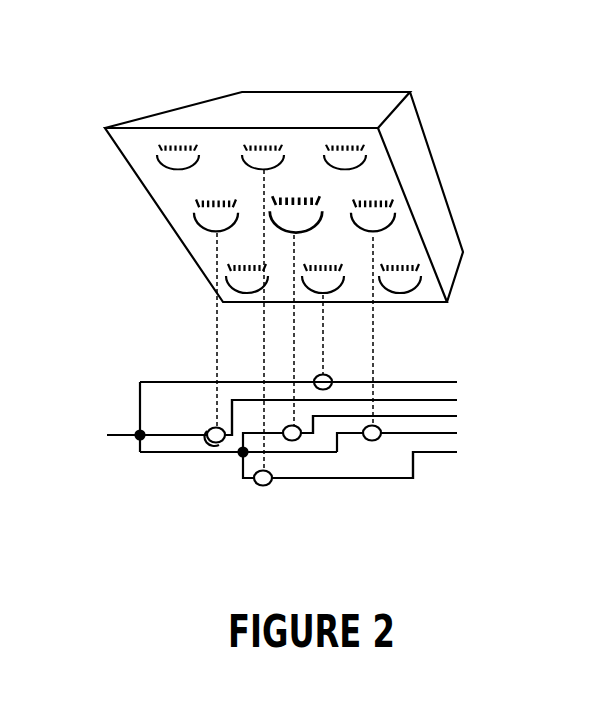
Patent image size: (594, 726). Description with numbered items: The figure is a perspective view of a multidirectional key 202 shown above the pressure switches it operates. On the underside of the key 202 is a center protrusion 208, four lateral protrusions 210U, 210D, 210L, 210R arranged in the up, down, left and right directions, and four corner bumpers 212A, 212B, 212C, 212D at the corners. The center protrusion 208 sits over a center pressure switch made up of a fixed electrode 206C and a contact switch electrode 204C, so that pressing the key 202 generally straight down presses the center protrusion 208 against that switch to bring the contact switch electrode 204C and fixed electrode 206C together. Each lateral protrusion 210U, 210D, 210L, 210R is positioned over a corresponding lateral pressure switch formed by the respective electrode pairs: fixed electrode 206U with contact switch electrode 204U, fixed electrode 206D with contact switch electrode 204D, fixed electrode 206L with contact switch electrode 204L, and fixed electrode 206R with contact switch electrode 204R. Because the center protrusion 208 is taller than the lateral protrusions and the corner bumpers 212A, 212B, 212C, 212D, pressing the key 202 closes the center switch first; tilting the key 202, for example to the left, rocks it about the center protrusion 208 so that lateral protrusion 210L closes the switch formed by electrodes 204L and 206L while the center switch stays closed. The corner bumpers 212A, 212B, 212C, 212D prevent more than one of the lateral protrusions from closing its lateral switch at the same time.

The key 202 is at (423, 127).
The center protrusion 208 is at (297, 205).
The lateral protrusion 210D is at (257, 143).
The lateral protrusion 210L is at (205, 222).
The lateral protrusion 210R is at (383, 222).
The lateral protrusion 210U is at (335, 288).
The corner bumper 212A is at (235, 279).
The corner bumper 212B is at (165, 160).
The corner bumper 212C is at (352, 160).
The corner bumper 212D is at (402, 280).
The contact switch electrode 204U is at (331, 378).
The contact switch electrode 204L is at (217, 446).
The contact switch electrode 204C is at (294, 441).
The contact switch electrode 204R is at (413, 465).
The contact switch electrode 204D is at (273, 483).
The fixed electrode 206U is at (316, 380).
The fixed electrode 206L is at (209, 428).
The fixed electrode 206C is at (286, 442).
The fixed electrode 206R is at (375, 442).
The fixed electrode 206D is at (254, 487).